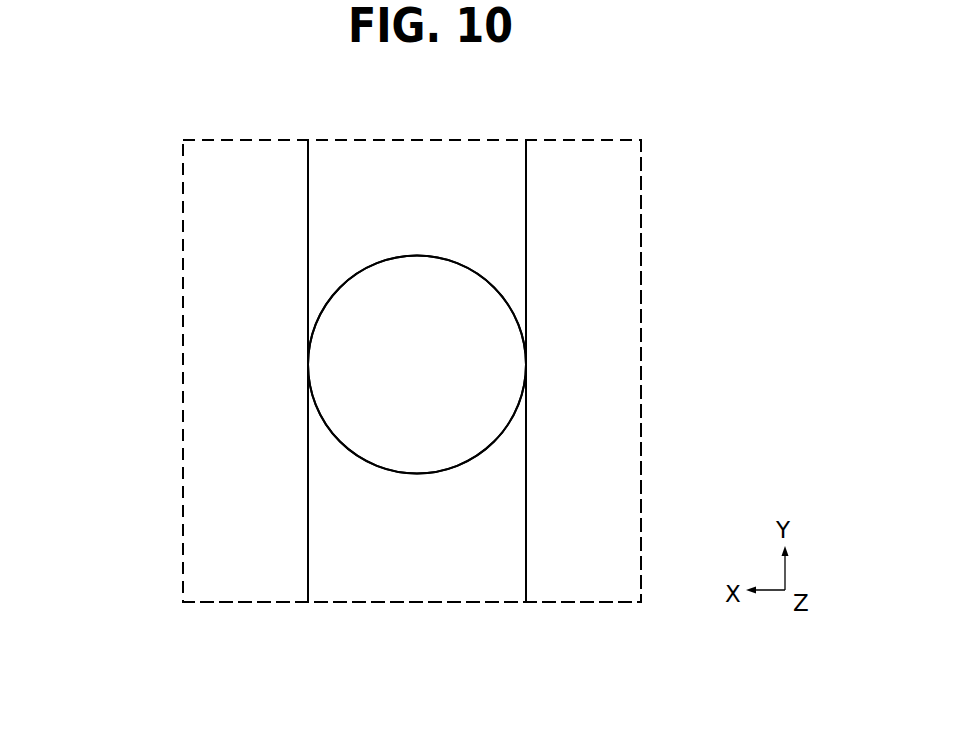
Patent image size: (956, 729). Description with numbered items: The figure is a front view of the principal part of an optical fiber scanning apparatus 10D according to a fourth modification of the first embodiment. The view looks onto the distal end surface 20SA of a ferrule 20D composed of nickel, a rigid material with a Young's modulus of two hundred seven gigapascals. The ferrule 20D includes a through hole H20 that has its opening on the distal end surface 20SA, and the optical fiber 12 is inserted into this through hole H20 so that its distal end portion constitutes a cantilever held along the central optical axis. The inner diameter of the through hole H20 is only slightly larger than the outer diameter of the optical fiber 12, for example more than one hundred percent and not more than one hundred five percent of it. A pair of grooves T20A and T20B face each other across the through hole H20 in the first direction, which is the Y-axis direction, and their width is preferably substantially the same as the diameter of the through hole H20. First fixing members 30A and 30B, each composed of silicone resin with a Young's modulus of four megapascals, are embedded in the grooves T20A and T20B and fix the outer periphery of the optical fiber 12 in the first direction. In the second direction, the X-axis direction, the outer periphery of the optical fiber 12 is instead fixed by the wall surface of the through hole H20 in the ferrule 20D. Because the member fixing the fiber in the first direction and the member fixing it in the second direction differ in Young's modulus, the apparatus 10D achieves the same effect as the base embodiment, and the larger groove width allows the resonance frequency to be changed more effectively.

The optical fiber scanning apparatus 10D is at (110, 149).
The ferrule 20D is at (641, 222).
The groove T20A is at (395, 137).
The groove T20B is at (335, 607).
The distal end surface 20SA is at (575, 573).
The first fixing member 30A is at (308, 213).
The first fixing member 30B is at (308, 505).
The optical fiber 12 is at (328, 302).
The through hole H20 is at (496, 380).